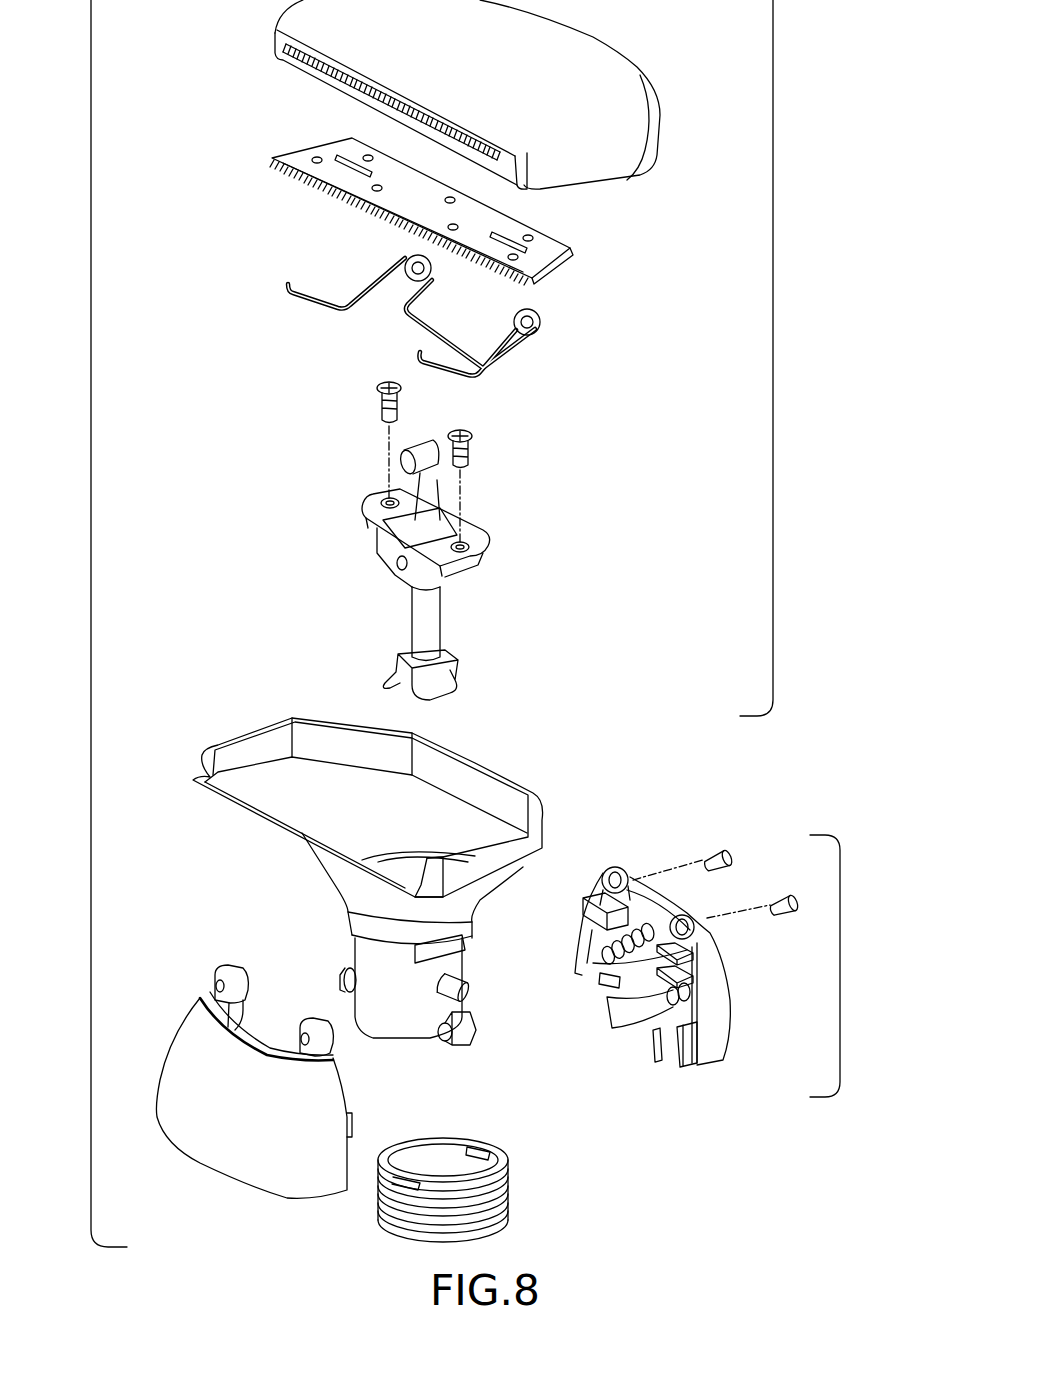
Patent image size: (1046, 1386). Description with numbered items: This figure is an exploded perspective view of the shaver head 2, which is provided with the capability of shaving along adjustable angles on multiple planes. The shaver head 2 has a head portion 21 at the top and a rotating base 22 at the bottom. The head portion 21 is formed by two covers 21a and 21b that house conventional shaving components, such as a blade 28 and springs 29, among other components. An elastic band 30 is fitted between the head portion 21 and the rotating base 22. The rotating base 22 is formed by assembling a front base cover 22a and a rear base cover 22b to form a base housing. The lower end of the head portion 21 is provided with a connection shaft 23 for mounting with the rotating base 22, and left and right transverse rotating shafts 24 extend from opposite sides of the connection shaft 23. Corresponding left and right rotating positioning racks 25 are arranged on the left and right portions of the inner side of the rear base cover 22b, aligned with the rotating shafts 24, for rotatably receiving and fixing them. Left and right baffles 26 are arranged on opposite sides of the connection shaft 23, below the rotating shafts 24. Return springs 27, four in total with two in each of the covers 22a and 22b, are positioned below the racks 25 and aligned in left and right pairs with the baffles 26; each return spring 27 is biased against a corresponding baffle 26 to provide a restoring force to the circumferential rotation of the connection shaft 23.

The shaver head 2 is at (91, 612).
The head portion 21 is at (773, 346).
The cover 21a is at (638, 149).
The cover 21b is at (543, 827).
The rotating base 22 is at (840, 961).
The front base cover 22a is at (193, 1047).
The rear base cover 22b is at (727, 1020).
The connection shaft 23 is at (367, 1000).
The rotating shaft 24 is at (473, 987).
The rotating positioning rack 25 is at (590, 910).
The baffle 26 is at (340, 983).
The return spring 27 is at (598, 953).
The blade 28 is at (570, 262).
The spring 29 is at (513, 343).
The elastic band 30 is at (508, 1190).